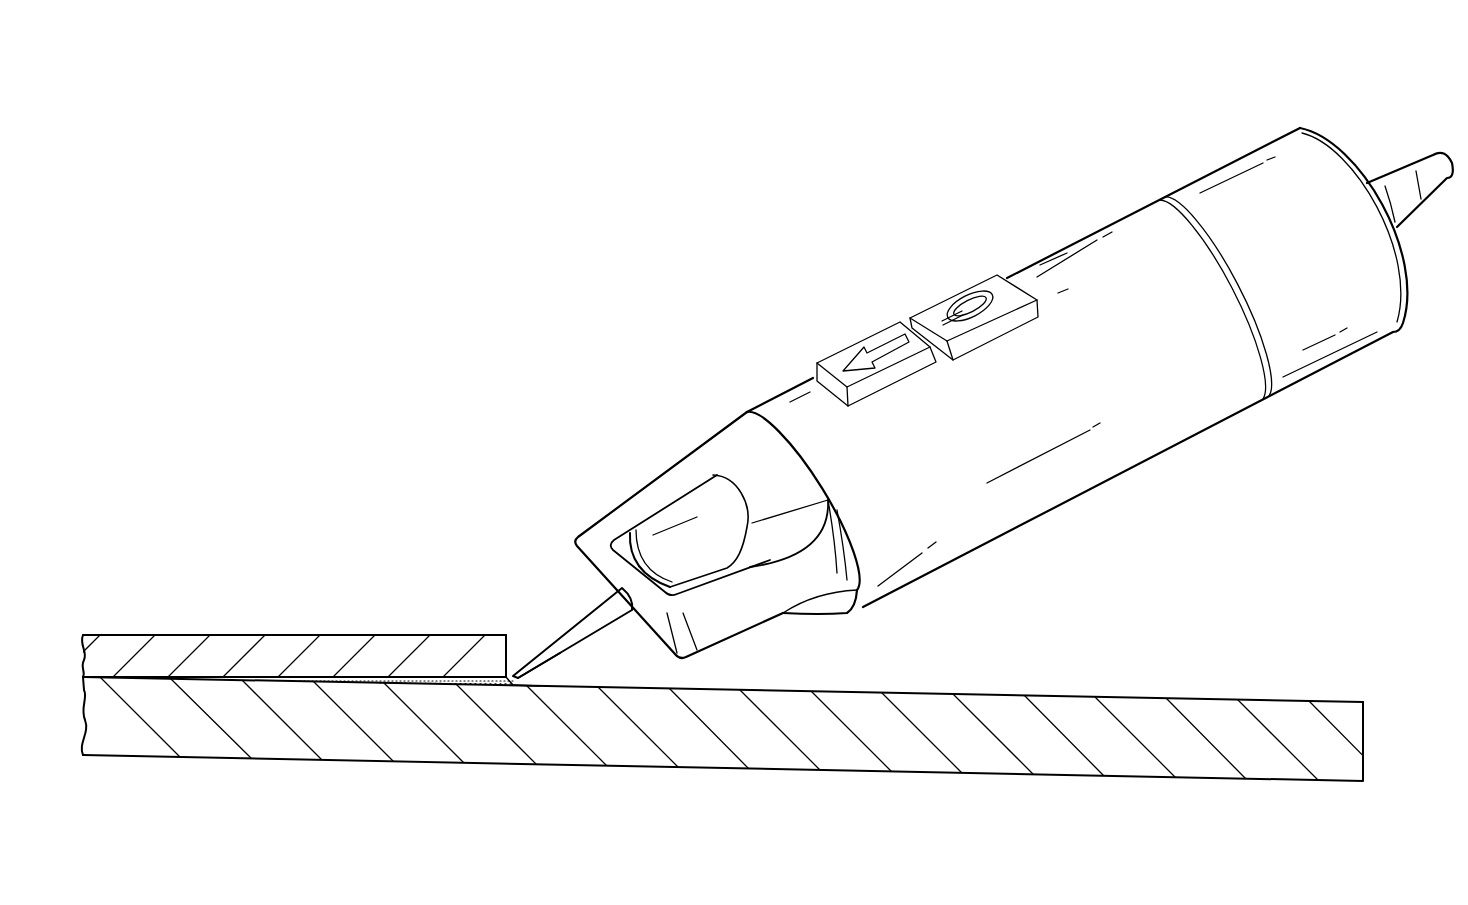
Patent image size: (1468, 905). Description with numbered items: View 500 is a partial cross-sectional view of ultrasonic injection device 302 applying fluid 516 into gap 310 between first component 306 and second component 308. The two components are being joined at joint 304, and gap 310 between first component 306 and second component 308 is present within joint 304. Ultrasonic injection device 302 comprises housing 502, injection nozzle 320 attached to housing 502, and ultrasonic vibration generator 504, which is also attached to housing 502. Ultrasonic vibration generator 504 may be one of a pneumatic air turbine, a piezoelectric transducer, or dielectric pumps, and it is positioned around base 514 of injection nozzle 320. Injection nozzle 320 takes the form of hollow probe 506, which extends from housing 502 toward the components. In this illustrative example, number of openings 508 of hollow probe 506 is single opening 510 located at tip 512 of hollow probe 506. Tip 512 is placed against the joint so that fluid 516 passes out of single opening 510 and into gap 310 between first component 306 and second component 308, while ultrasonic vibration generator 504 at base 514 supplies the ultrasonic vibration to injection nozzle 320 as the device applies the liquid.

The view 500 is at (559, 103).
The ultrasonic injection device 302 is at (931, 225).
The housing 502 is at (1085, 242).
The ultrasonic vibration generator 504 is at (614, 508).
The base 514 is at (705, 517).
The injection nozzle 320 is at (586, 603).
The hollow probe 506 is at (553, 642).
The number of openings 508 is at (542, 677).
The joint 304 is at (135, 672).
The first component 306 is at (235, 642).
The second component 308 is at (1273, 707).
The gap 310 is at (353, 680).
The tip 512 is at (508, 667).
The fluid 516 is at (417, 682).
The single opening 510 is at (528, 686).